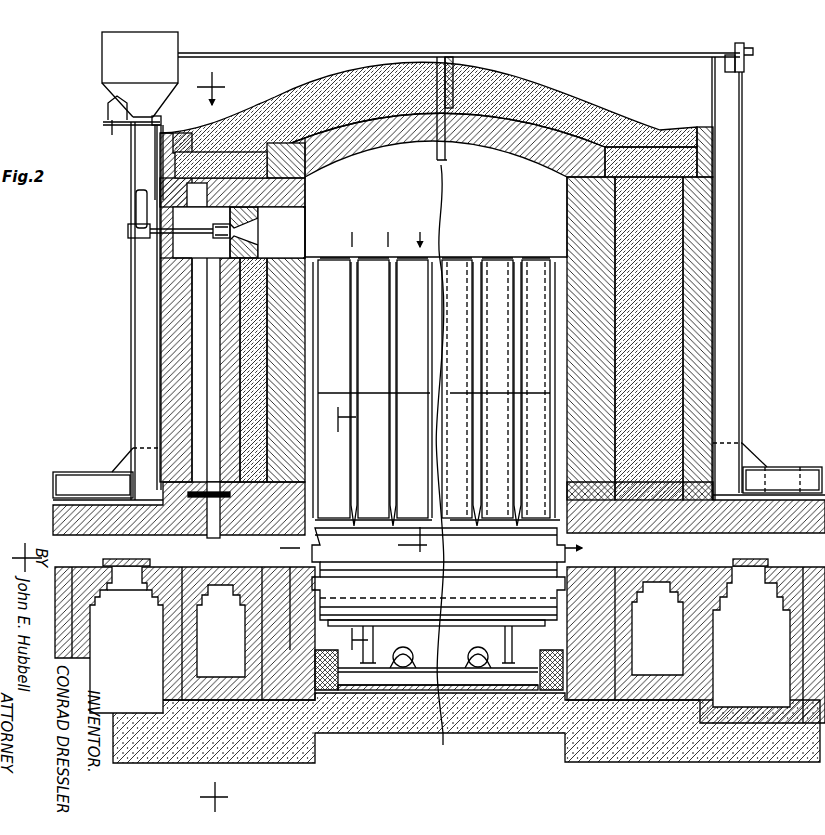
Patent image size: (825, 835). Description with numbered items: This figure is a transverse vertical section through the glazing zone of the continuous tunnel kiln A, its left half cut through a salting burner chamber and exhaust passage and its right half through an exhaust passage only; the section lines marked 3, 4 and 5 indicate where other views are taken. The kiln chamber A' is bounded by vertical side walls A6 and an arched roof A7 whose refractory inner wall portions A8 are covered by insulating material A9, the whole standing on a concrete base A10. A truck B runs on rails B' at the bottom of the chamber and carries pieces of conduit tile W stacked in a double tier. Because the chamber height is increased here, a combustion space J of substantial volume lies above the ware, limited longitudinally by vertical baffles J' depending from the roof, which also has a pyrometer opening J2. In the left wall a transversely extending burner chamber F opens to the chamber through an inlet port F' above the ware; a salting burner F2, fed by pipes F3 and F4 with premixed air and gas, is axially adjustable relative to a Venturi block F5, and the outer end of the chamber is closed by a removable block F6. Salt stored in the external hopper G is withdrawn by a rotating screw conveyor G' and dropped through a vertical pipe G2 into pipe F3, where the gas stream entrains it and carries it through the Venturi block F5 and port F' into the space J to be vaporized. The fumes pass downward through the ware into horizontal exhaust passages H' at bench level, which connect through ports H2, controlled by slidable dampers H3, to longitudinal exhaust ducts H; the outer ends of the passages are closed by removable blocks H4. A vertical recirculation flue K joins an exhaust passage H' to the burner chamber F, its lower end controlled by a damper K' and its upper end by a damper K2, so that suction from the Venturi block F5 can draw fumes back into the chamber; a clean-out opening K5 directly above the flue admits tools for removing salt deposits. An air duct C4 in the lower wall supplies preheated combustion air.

The continuous tunnel kiln A is at (501, 271).
The kiln chamber A' is at (465, 747).
The side wall A6 is at (713, 232).
The arched roof A7 is at (548, 66).
The refractory inner wall portion A8 is at (551, 162).
The insulating material A9 is at (582, 103).
The concrete base A10 is at (678, 760).
The kiln car B is at (438, 574).
The rails B' is at (439, 655).
The air duct C4 is at (440, 629).
The burner chamber F is at (201, 232).
The inlet port F' is at (319, 230).
The salting burner F2 is at (222, 228).
The supply pipe F3 is at (190, 228).
The supply pipe F4 is at (136, 217).
The Venturi block F5 is at (262, 223).
The removable block F6 is at (167, 247).
The hopper G is at (120, 83).
The rotating screw conveyor G' is at (168, 114).
The vertical pipe G2 is at (157, 168).
The exhaust duct H is at (440, 645).
The exhaust passage H' is at (528, 520).
The port H2 is at (138, 592).
The slidable damper H3 is at (136, 562).
The removable block H4 is at (53, 540).
The combustion space J is at (436, 217).
The vertical baffle J' is at (318, 122).
The pyrometer opening J2 is at (449, 108).
The recirculation flue K is at (134, 311).
The slidable damper K' is at (209, 510).
The damper K2 is at (232, 240).
The clean-out opening K5 is at (165, 192).
The conduit tile W is at (487, 262).
The section line 3 is at (223, 442).
The section line 4 is at (219, 561).
The section line 5 is at (344, 529).